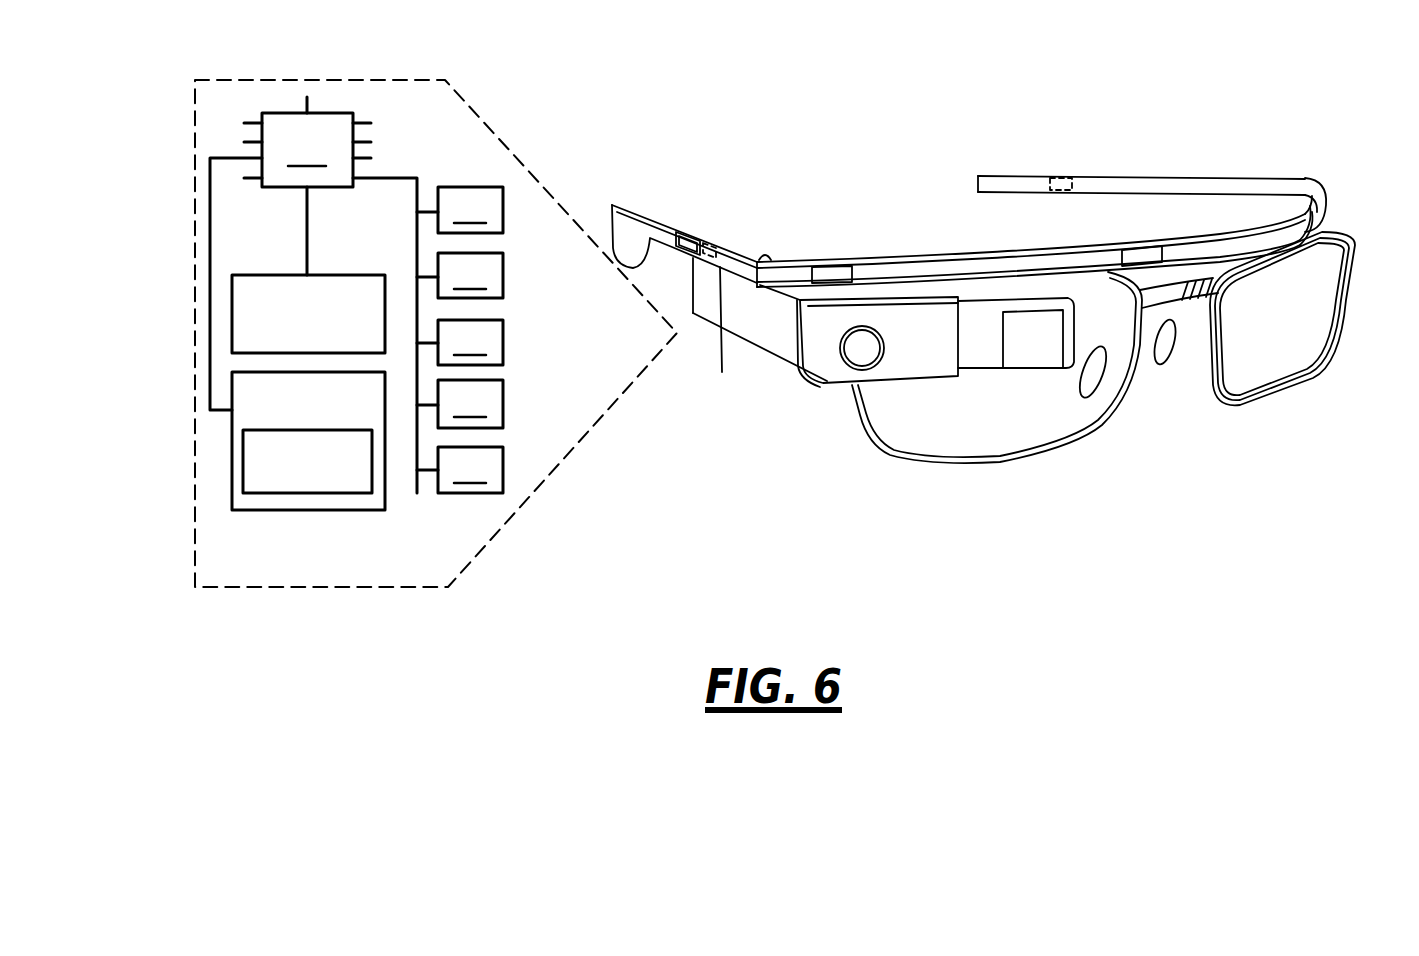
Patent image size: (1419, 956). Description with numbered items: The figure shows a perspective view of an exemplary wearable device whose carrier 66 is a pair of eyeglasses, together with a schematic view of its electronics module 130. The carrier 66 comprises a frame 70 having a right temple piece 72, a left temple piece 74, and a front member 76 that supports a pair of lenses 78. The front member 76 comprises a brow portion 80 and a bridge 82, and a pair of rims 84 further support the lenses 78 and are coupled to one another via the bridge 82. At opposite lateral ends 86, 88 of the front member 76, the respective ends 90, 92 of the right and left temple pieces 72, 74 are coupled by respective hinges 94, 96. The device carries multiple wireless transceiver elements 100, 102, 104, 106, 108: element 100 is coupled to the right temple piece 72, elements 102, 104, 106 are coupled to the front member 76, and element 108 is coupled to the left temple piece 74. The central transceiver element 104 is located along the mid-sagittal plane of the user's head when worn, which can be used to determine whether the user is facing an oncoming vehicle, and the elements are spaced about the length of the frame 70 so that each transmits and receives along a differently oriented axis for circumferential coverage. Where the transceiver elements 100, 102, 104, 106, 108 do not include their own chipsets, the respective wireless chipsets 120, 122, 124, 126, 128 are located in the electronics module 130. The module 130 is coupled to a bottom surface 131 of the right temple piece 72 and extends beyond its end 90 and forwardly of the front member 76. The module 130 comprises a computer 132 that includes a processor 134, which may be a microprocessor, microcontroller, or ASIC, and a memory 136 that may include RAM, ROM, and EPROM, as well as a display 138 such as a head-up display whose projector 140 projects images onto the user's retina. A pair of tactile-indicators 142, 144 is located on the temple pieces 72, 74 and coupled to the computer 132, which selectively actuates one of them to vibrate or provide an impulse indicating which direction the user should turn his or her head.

The carrier 66 is at (1180, 176).
The frame 70 is at (877, 257).
The right temple piece 72 is at (648, 209).
The left temple piece 74 is at (1016, 177).
The front member 76 is at (958, 257).
The lenses 78 is at (1060, 422).
The brow portion 80 is at (1027, 268).
The bridge 82 is at (1168, 278).
The rims 84 is at (925, 457).
The lateral end 86 is at (797, 263).
The lateral end 88 is at (1325, 200).
The end 90 is at (760, 335).
The end 92 is at (1293, 190).
The hinge 94 is at (765, 256).
The hinge 96 is at (1313, 185).
The wireless transceiver element 100 is at (688, 233).
The wireless transceiver element 102 is at (832, 267).
The central transceiver element 104 is at (1130, 251).
The wireless transceiver element 106 is at (1328, 212).
The wireless transceiver element 108 is at (1068, 176).
The wireless chipset 120 is at (470, 210).
The wireless chipset 122 is at (470, 275).
The wireless chipset 124 is at (470, 342).
The wireless chipset 126 is at (470, 404).
The wireless chipset 128 is at (470, 470).
The electronics module 130 is at (823, 343).
The bottom surface 131 is at (694, 315).
The computer 132 is at (400, 474).
The processor 134 is at (332, 113).
The memory 136 is at (232, 287).
The display 138 is at (232, 493).
The projector 140 is at (243, 448).
The tactile-indicator 142 is at (720, 240).
The tactile-indicator 144 is at (1265, 184).